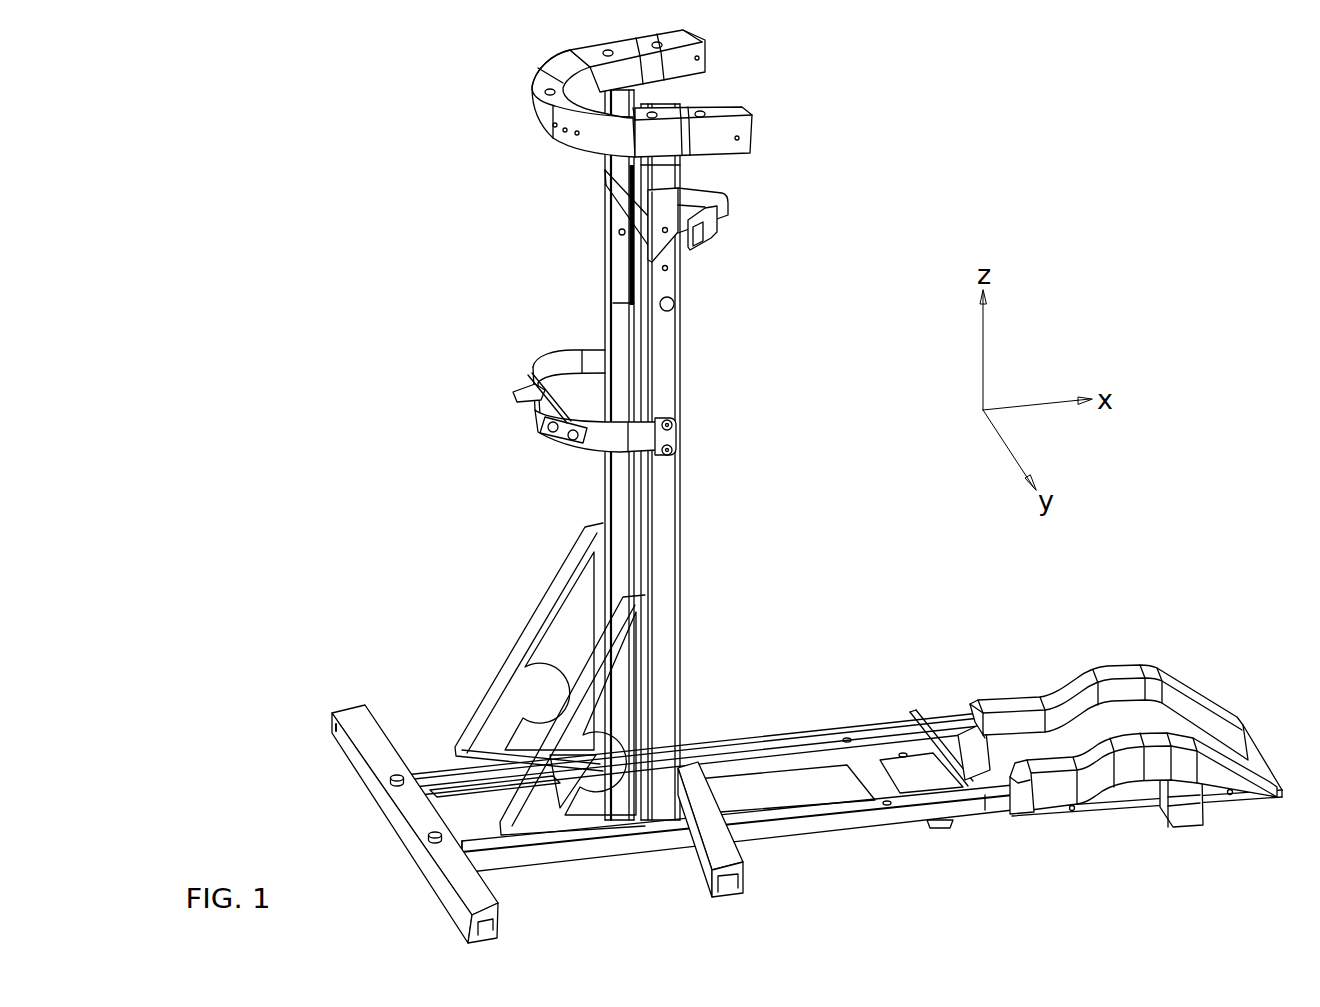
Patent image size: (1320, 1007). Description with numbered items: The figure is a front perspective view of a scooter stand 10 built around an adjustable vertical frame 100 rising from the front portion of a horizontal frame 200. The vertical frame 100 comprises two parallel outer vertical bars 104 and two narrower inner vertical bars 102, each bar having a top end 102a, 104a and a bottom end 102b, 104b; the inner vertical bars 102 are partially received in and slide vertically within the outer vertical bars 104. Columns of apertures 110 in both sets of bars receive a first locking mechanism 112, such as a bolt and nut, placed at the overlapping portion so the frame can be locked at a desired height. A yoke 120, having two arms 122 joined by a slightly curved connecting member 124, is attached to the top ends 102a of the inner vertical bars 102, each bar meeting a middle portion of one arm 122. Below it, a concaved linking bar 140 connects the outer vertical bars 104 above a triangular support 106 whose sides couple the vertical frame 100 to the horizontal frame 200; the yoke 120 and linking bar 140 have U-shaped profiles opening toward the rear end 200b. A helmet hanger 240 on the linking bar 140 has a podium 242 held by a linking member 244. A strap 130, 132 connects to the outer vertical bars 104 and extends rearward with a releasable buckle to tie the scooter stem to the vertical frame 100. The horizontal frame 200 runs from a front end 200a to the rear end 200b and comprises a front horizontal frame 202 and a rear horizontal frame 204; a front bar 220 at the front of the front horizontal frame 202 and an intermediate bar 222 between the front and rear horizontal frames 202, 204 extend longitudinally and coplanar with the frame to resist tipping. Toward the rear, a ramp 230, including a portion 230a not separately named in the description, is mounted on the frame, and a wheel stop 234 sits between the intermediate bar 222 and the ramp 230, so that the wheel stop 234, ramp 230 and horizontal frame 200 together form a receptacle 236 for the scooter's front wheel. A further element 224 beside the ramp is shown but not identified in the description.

The scooter stand 10 is at (354, 157).
The adjustable vertical frame 100 is at (688, 448).
The inner vertical bars 102 is at (618, 166).
The top end 102a is at (623, 100).
The bottom end 102b is at (622, 294).
The outer vertical bars 104 is at (668, 503).
The top end 104a is at (668, 203).
The bottom end 104b is at (663, 800).
The support 106 is at (515, 677).
The apertures 110 is at (668, 268).
The first locking mechanism 112 is at (676, 307).
The yoke 120 is at (617, 93).
The arms 122 is at (610, 72).
The connecting member 124 is at (533, 100).
The strap 130 is at (673, 221).
The strap 132 is at (709, 232).
The concaved linking bar 140 is at (498, 429).
The horizontal frame 200 is at (804, 754).
The first end of base frame 200a is at (493, 858).
The rear end 200b is at (988, 807).
The front horizontal frame 202 is at (590, 850).
The rear horizontal frame 204 is at (850, 820).
The front bar 220 is at (353, 713).
The intermediate bar 222 is at (718, 883).
The mounting block 224 is at (1187, 822).
The ramp 230 is at (1128, 702).
The front cradle hump 230a is at (1223, 733).
The wheel stop 234 is at (932, 722).
The receptacle 236 is at (960, 760).
The helmet hanger 240 is at (453, 410).
The podium 242 is at (523, 390).
The linking member 244 is at (535, 414).